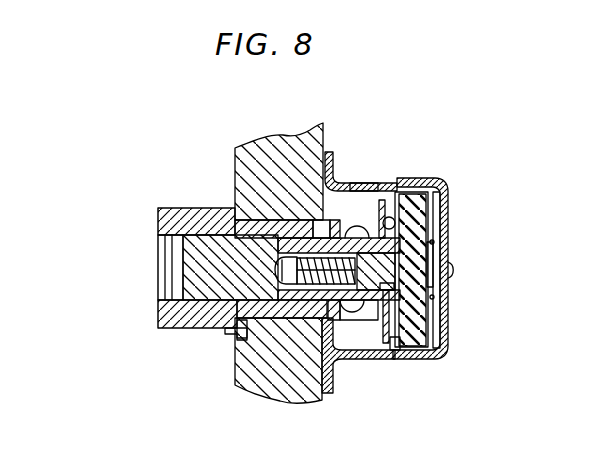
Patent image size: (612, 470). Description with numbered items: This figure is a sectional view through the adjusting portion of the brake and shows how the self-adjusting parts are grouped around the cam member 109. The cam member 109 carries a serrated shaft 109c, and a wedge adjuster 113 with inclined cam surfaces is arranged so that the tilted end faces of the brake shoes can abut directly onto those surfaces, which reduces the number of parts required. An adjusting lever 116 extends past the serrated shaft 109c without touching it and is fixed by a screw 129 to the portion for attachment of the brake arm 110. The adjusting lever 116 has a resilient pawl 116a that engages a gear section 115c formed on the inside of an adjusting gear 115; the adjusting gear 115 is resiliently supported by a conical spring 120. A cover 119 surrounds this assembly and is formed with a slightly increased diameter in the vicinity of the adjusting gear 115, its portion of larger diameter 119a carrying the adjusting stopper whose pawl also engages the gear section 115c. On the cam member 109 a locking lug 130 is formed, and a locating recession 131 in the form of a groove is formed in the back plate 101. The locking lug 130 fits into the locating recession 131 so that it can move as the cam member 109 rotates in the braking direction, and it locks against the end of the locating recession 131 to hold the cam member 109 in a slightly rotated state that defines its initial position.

The back plate 101 is at (264, 378).
The cam member 109 is at (147, 318).
The serrated shaft 109c is at (353, 183).
The brake arm 110 is at (345, 362).
The wedge adjuster 113 is at (206, 255).
The adjusting gear 115 is at (418, 313).
The gear section 115c is at (391, 355).
The adjusting lever 116 is at (385, 340).
The resilient pawl 116a is at (388, 196).
The cover 119 is at (366, 184).
The portion of larger diameter 119a is at (423, 179).
The conical spring 120 is at (445, 252).
The screw 129 is at (395, 223).
The locking lug 130 is at (225, 336).
The locating recession 131 is at (244, 347).